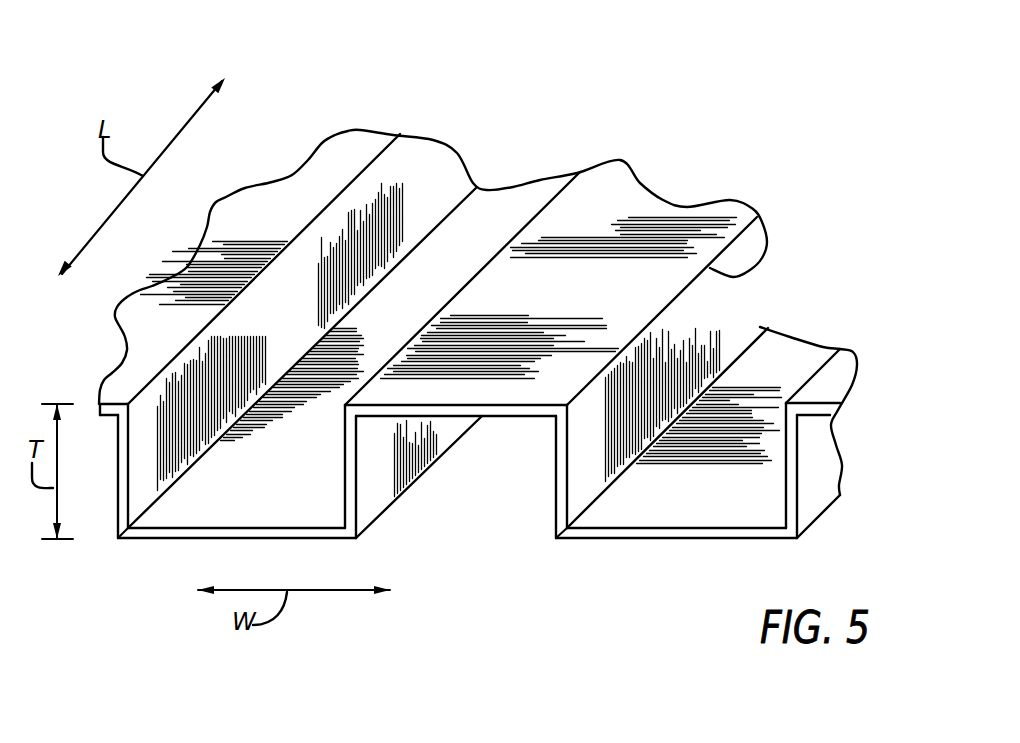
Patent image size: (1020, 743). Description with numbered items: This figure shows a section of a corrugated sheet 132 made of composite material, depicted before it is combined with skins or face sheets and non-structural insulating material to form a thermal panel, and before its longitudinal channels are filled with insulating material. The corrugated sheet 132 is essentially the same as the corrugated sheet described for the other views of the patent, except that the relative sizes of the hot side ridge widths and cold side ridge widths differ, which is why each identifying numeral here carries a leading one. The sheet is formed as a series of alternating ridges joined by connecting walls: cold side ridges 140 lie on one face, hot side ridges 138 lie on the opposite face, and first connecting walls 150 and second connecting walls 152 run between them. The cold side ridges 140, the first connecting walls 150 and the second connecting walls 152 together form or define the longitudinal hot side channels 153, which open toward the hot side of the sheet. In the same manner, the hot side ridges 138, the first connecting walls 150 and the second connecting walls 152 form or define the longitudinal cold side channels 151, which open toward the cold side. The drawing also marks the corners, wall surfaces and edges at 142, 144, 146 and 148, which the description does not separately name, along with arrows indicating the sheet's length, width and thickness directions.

The corrugated sheet 132 is at (665, 210).
The hot side ridge 138 is at (216, 540).
The cold side ridge 140 is at (470, 307).
The bottom corner 142 is at (133, 532).
The outer side wall surface 144 is at (400, 497).
The convex top edge 146 is at (420, 329).
The concave inner corner edge 148 is at (237, 297).
The first connecting wall 150 is at (530, 556).
The longitudinal cold side channel 151 is at (508, 212).
The second connecting wall 152 is at (350, 480).
The longitudinal hot side channel 153 is at (103, 461).